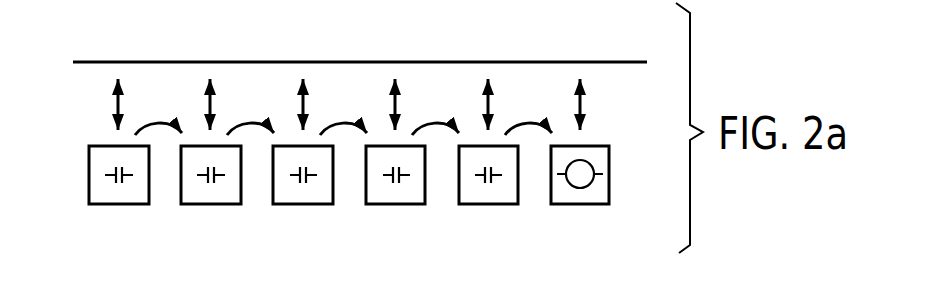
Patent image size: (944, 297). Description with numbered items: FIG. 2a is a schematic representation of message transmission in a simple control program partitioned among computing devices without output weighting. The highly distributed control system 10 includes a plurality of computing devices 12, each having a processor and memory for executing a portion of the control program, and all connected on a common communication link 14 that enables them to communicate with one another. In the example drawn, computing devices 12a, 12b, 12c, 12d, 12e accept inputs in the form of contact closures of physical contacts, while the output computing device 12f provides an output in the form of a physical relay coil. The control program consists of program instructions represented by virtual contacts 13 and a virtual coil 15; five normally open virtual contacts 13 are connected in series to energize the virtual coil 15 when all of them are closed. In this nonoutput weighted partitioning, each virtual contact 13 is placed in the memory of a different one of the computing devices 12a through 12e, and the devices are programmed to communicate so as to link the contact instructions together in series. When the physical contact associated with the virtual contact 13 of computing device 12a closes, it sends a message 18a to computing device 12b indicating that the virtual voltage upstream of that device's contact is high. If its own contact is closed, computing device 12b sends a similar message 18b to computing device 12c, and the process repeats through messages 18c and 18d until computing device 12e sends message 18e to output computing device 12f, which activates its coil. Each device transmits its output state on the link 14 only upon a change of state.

The highly distributed control system 10 is at (592, 40).
The computing devices 12 is at (80, 197).
The computing device 12a is at (123, 205).
The computing device 12b is at (208, 205).
The computing device 12c is at (320, 205).
The computing device 12d is at (405, 205).
The computing device 12e is at (500, 205).
The output computing device 12f is at (598, 205).
The virtual contacts 13 is at (118, 179).
The common communication link 14 is at (97, 62).
The virtual coil 15 is at (596, 162).
The message 18a is at (175, 126).
The message 18b is at (267, 126).
The message 18c is at (360, 126).
The message 18d is at (452, 126).
The message 18e is at (545, 126).